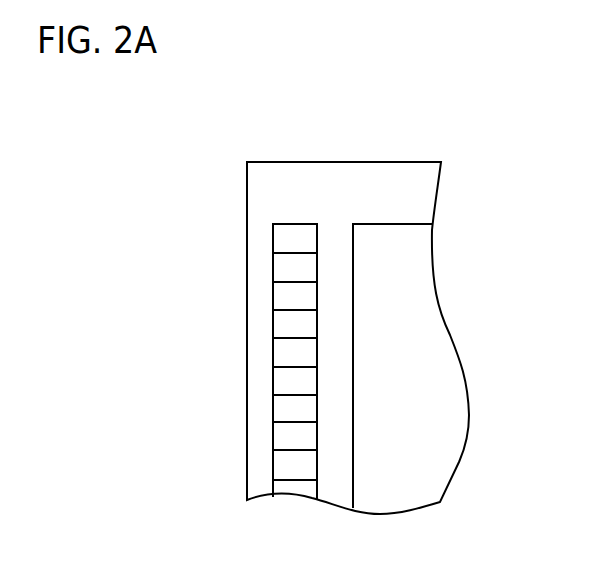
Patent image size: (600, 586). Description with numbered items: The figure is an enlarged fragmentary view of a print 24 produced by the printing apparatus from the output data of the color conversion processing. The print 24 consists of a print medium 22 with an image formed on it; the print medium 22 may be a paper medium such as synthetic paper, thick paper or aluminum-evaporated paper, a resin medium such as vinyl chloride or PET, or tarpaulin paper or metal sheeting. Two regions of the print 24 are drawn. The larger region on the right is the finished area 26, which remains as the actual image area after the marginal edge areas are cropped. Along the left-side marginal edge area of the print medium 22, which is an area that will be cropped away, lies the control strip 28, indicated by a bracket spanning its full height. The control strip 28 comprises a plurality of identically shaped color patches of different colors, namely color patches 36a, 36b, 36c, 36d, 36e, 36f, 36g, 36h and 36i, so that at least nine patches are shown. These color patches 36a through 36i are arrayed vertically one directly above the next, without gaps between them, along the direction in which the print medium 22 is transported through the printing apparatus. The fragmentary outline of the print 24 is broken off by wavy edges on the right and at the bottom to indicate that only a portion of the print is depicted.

The print medium 22 is at (415, 200).
The print 24 is at (313, 121).
The finished area 26 is at (415, 283).
The control strip 28 is at (178, 227).
The color patch 36a is at (273, 244).
The color patch 36b is at (273, 270).
The color patch 36c is at (273, 297).
The color patch 36d is at (273, 325).
The color patch 36e is at (273, 353).
The color patch 36f is at (273, 381).
The color patch 36g is at (273, 409).
The color patch 36h is at (273, 437).
The color patch 36i is at (273, 466).